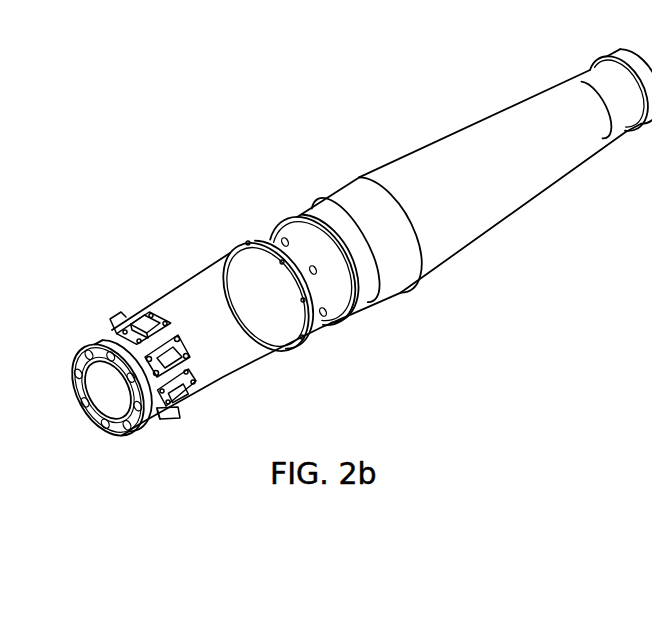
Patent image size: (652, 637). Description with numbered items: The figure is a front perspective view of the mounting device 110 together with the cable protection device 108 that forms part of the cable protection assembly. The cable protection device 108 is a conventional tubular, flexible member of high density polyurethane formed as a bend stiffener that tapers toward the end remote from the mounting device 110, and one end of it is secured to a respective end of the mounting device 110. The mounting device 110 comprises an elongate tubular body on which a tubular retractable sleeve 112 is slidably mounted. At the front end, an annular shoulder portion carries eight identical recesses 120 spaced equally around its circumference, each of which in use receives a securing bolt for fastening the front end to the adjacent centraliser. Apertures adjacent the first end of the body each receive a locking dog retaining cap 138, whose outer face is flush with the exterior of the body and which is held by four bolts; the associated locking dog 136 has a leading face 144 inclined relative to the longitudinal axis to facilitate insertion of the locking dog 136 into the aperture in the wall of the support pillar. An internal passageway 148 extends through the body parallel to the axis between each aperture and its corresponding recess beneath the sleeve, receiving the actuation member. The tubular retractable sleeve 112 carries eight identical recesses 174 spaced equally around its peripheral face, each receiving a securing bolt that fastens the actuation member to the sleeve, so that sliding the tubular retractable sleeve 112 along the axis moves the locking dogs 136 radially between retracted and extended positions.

The cable protection device 108 is at (522, 176).
The mounting device 110 is at (146, 273).
The tubular retractable sleeve 112 is at (271, 238).
The recesses 120 is at (152, 421).
The locking dog 136 is at (125, 322).
The locking dog retaining cap 138 is at (197, 380).
The leading face 144 is at (183, 398).
The internal passageway 148 is at (103, 427).
The recesses 174 is at (324, 314).